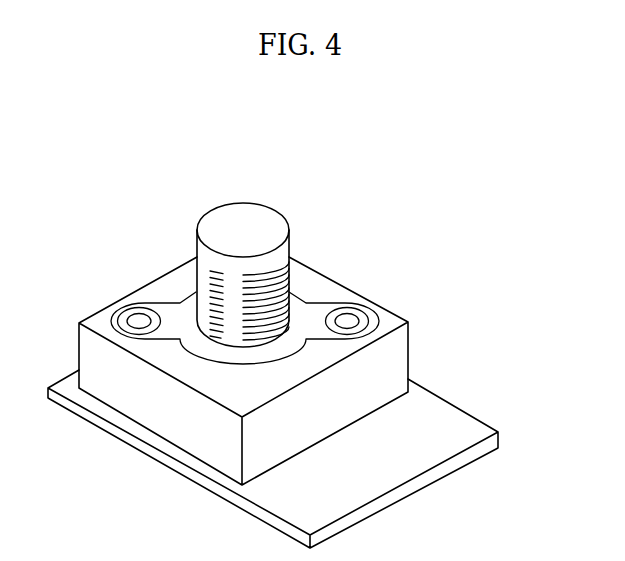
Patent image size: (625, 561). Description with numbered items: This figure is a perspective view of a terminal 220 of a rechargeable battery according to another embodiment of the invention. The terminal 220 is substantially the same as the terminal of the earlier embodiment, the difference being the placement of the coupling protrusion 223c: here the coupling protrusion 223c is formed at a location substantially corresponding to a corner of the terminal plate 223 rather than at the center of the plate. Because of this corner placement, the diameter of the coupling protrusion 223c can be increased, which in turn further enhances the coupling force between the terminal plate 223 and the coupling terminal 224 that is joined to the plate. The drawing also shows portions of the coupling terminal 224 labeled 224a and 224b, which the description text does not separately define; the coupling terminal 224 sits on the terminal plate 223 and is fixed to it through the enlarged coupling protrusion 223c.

The terminal 220 is at (312, 329).
The terminal plate 223 is at (328, 350).
The coupling protrusion 223c is at (350, 318).
The coupling terminal 224 is at (274, 237).
The terminal base portion 224a is at (312, 308).
The threaded boss 224b is at (293, 243).